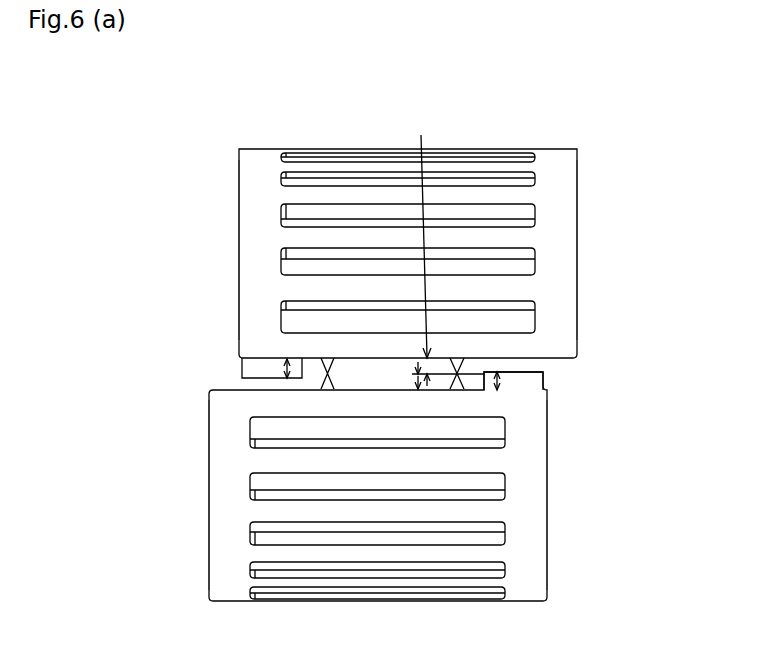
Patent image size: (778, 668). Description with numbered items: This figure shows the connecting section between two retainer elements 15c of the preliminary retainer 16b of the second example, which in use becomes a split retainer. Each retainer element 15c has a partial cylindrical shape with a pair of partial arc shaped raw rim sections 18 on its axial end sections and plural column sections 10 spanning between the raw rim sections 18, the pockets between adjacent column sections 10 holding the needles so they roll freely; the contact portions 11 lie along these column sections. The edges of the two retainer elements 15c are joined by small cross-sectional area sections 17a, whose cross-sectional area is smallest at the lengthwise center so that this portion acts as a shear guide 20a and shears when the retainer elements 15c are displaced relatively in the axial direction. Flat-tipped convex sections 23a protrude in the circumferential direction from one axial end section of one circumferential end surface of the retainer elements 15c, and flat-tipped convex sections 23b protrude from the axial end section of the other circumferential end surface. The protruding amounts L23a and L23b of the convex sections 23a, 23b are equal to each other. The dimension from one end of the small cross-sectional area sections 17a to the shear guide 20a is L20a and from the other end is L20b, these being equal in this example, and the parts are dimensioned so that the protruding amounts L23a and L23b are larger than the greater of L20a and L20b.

The column sections 10 is at (470, 200).
The contact portion 11 is at (318, 208).
The retainer elements 15c is at (580, 265).
The preliminary retainer 16b is at (594, 186).
The small cross-sectional area sections 17a is at (328, 356).
The raw rim sections 18 is at (257, 190).
The shear guide 20a is at (463, 375).
The convex sections 23a is at (541, 377).
The convex sections 23b is at (243, 356).
The dimension from one end section of the small cross-sectional area section to the L20a is at (426, 246).
The dimension from the other end section of the small cross-sectional area section t L20b is at (418, 376).
The amount of protrusion of the convex section 23a L23a is at (505, 384).
The amount of protrusion of the convex section 23b L23b is at (243, 363).